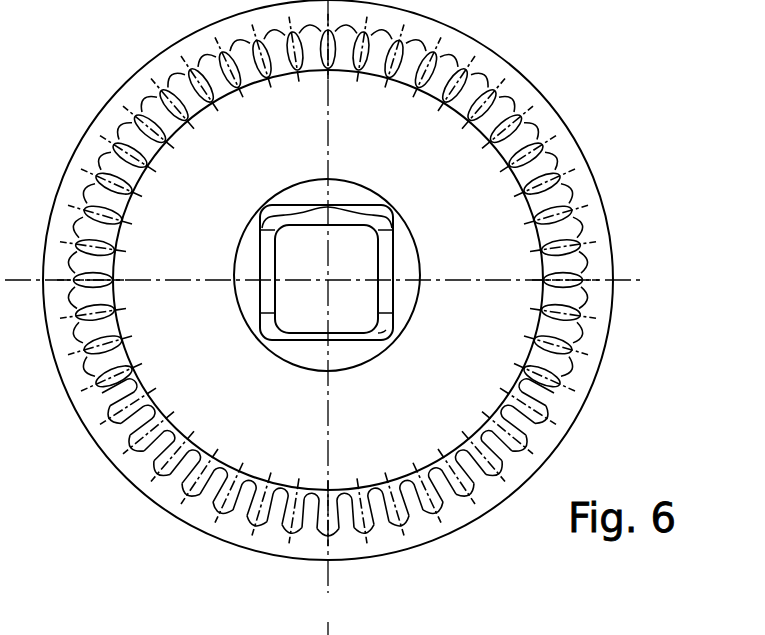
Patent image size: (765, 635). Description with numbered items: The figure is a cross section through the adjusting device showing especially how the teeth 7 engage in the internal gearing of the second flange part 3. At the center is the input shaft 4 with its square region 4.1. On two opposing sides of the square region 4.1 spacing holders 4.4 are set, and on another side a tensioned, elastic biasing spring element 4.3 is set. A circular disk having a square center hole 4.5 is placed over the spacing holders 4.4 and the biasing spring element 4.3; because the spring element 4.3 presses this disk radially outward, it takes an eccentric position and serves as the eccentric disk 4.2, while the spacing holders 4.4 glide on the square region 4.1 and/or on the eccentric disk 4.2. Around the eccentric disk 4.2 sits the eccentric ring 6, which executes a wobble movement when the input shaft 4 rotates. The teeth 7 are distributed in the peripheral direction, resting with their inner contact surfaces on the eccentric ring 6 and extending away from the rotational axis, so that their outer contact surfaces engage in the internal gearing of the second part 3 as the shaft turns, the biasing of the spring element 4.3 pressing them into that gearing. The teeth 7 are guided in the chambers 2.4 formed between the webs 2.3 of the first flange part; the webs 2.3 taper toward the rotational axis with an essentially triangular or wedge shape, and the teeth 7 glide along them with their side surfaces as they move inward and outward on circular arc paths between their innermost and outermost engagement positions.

The second flange part 3 is at (522, 82).
The teeth 7 is at (160, 153).
The webs 2.3 is at (102, 235).
The chambers 2.4 is at (235, 487).
The input shaft 4 is at (311, 270).
The square region 4.1 is at (367, 245).
The eccentric disk 4.2 is at (298, 353).
The biasing spring element 4.3 is at (353, 213).
The spacing holders 4.4 is at (388, 302).
The square center hole 4.5 is at (388, 334).
The eccentric ring 6 is at (375, 434).